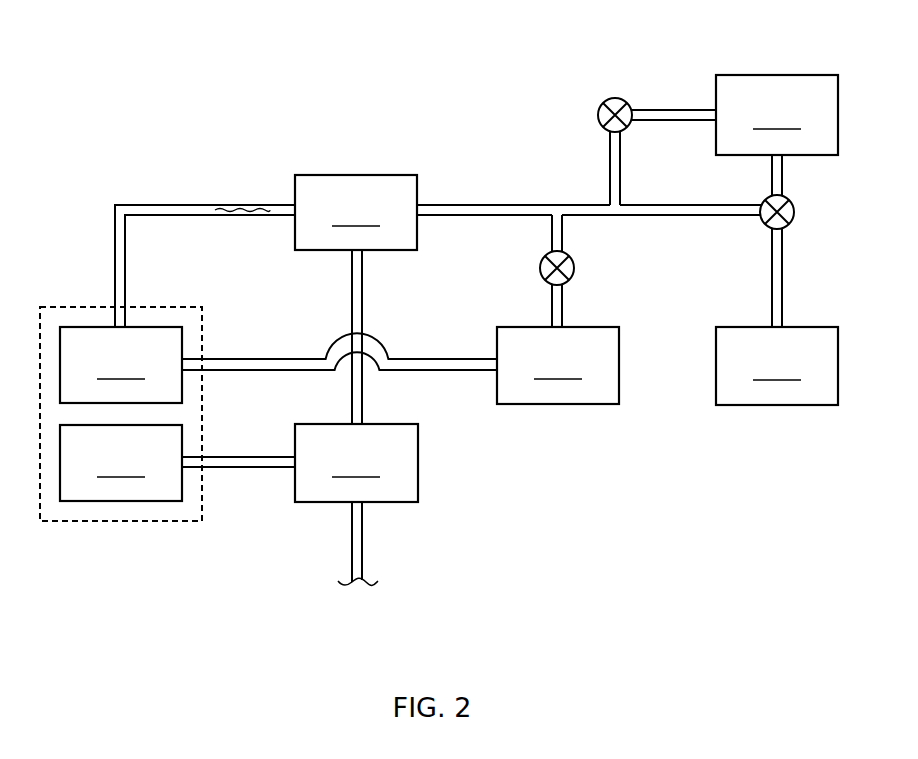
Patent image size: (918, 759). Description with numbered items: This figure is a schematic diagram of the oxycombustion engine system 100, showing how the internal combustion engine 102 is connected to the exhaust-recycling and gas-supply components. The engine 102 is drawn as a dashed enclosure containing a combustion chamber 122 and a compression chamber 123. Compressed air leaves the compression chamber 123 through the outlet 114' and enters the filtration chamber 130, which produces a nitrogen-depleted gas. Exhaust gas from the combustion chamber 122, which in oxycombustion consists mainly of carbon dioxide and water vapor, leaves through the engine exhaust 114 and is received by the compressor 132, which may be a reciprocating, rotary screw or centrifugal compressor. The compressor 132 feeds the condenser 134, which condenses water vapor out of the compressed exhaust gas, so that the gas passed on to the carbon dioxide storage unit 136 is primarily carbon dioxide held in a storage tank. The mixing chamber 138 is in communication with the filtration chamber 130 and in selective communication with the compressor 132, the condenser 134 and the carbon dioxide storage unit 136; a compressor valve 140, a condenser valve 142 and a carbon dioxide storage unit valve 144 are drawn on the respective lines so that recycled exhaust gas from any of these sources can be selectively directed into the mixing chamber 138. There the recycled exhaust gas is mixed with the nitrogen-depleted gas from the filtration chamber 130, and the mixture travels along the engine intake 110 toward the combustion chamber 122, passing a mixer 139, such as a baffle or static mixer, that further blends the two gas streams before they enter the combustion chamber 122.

The oxycombustion engine system 100 is at (111, 118).
The internal combustion engine 102 is at (113, 522).
The engine intake 110 is at (143, 205).
The engine exhaust 114 is at (339, 336).
The outlet 114' is at (238, 490).
The combustion chamber 122 is at (121, 365).
The compression chamber 123 is at (121, 463).
The filtration chamber 130 is at (356, 463).
The compressor 132 is at (558, 365).
The condenser 134 is at (777, 366).
The carbon dioxide storage unit 136 is at (777, 115).
The mixing chamber 138 is at (356, 212).
The mixer 139 is at (247, 205).
The compressor valve 140 is at (574, 268).
The condenser valve 142 is at (794, 212).
The carbon dioxide storage unit valve 144 is at (614, 98).